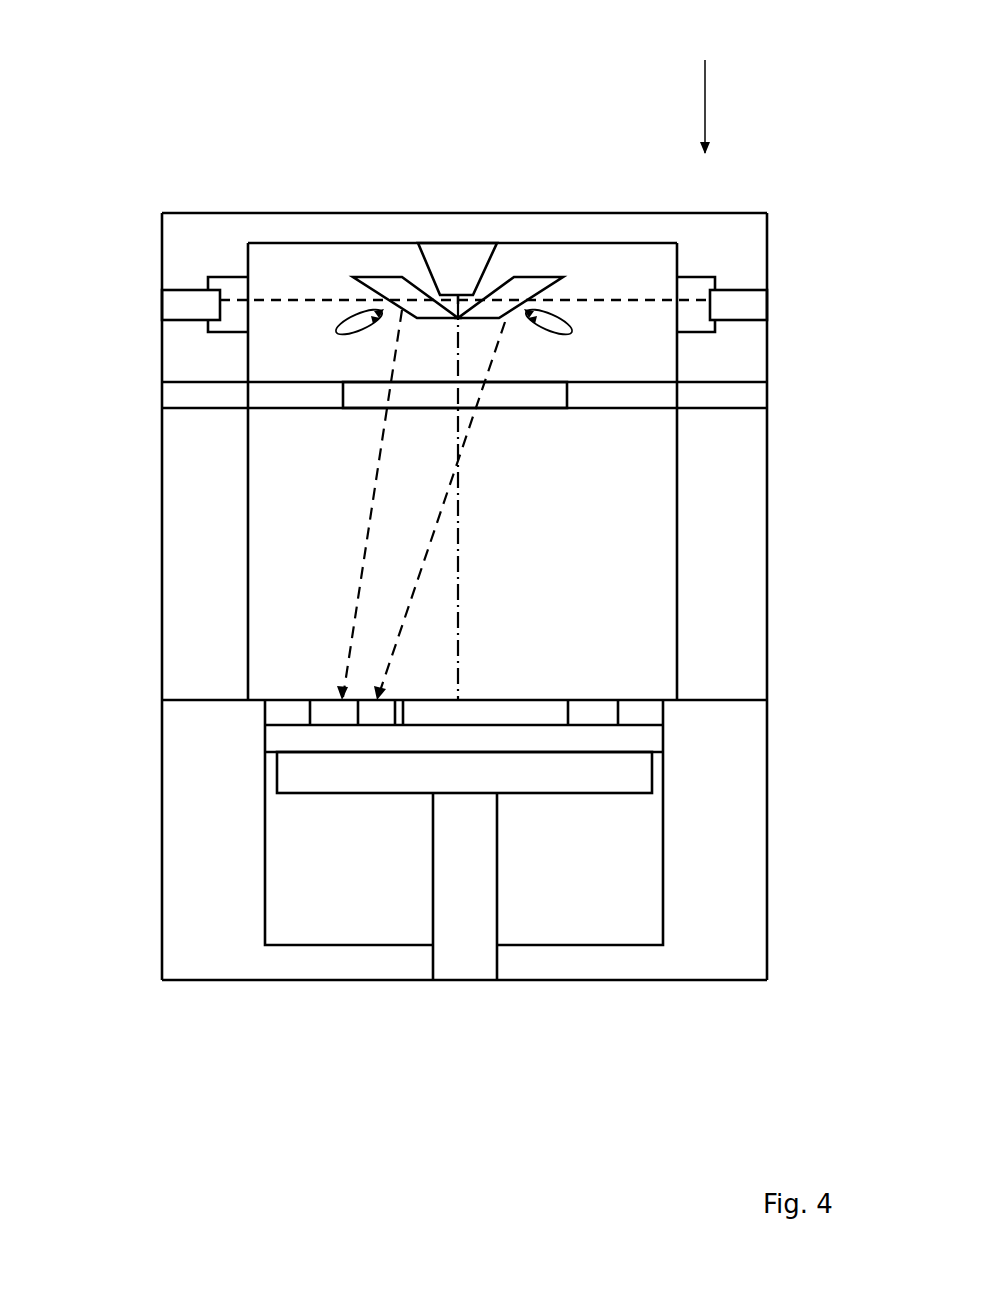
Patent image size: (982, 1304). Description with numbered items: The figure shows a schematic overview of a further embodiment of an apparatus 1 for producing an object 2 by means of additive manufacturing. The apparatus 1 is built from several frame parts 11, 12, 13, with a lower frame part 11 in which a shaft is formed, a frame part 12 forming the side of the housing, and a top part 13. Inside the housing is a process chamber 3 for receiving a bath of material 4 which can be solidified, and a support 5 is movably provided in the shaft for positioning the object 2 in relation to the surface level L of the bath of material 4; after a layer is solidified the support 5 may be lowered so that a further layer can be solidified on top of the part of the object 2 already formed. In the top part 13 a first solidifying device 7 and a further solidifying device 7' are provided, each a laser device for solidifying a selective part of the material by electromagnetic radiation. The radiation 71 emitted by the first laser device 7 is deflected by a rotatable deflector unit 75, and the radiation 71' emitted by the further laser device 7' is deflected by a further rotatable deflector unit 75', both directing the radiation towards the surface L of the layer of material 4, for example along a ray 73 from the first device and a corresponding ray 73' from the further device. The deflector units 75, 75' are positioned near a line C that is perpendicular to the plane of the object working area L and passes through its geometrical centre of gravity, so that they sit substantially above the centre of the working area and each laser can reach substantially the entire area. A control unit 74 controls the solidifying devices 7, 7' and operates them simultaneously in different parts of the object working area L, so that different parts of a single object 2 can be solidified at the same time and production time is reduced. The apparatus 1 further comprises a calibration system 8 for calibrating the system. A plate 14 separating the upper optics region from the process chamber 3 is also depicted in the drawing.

The apparatus 1 is at (218, 177).
The object 2 is at (342, 712).
The process chamber 3 is at (312, 590).
The bath of material 4 is at (508, 710).
The support 5 is at (612, 817).
The solidifying device 7 is at (722, 198).
The further solidifying device 7' is at (162, 298).
The calibration system 8 is at (705, 85).
The lower frame part 11 is at (200, 882).
The frame part 12 is at (200, 585).
The top part 13 is at (188, 243).
The partition plate 14 is at (283, 395).
The electromagnetic radiation 71 is at (584, 167).
The electromagnetic radiation 71' is at (339, 174).
The ray 73 is at (601, 511).
The laser beam path 73' is at (221, 505).
The control unit 74 is at (458, 267).
The deflector unit 75 is at (518, 210).
The further rotatable deflector unit 75' is at (395, 208).
The line C is at (460, 567).
The surface level L is at (508, 700).